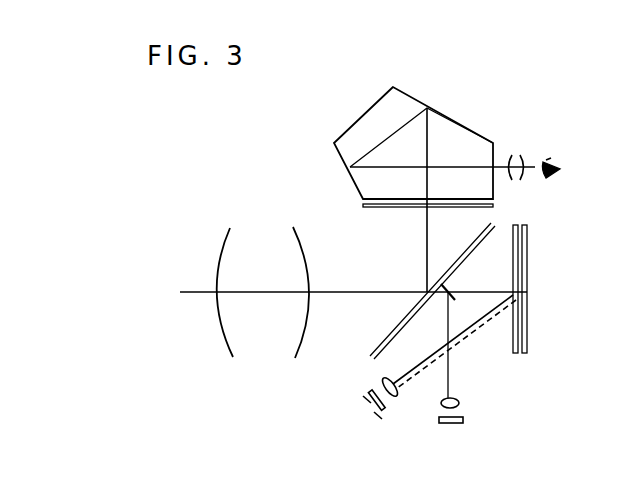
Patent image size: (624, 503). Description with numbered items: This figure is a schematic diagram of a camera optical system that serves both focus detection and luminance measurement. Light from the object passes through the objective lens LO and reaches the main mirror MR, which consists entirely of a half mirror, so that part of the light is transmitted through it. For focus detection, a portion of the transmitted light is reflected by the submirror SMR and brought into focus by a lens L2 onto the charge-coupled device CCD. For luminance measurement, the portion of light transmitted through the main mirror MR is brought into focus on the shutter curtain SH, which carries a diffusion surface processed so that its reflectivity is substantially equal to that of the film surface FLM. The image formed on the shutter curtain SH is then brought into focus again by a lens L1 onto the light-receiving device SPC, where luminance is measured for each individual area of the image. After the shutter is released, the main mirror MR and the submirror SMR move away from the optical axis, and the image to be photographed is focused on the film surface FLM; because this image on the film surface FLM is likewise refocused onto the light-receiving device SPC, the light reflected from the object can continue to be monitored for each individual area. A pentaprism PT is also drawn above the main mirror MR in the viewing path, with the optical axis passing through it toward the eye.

The pentaprism PT is at (473, 133).
The main mirror MR is at (463, 253).
The submirror SMR is at (447, 287).
The shutter curtain SH is at (522, 221).
The film surface FLM is at (528, 259).
The objective lens LO is at (227, 362).
The lens L1 is at (400, 392).
The lens L2 is at (457, 397).
The light-receiving device SPC is at (379, 413).
The charge-coupled device CCD is at (463, 419).